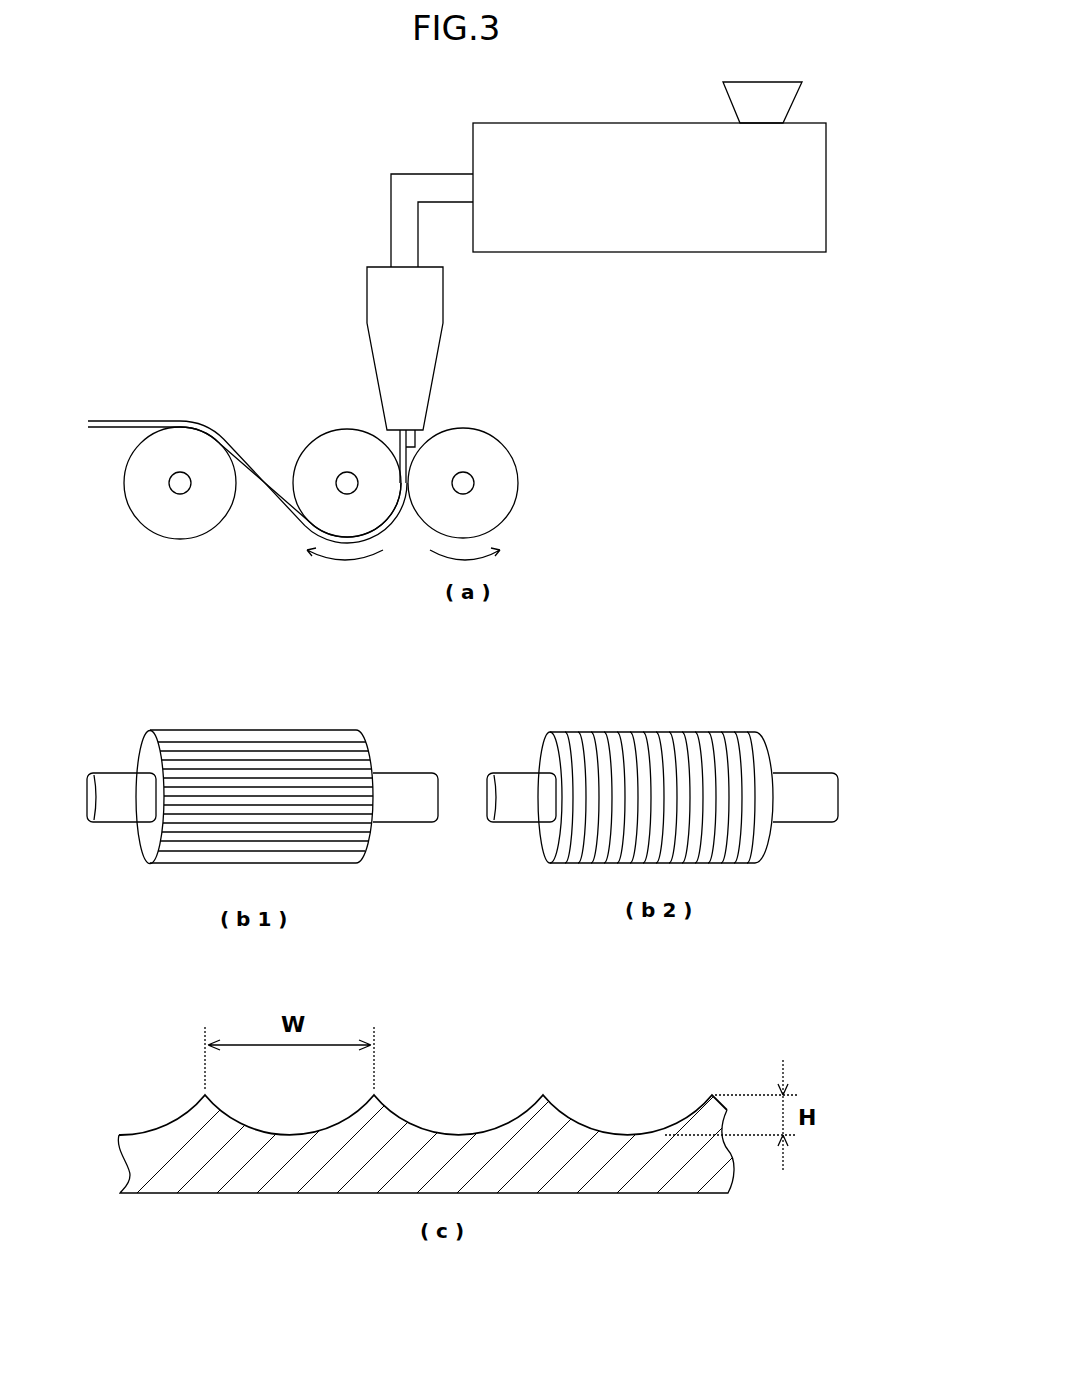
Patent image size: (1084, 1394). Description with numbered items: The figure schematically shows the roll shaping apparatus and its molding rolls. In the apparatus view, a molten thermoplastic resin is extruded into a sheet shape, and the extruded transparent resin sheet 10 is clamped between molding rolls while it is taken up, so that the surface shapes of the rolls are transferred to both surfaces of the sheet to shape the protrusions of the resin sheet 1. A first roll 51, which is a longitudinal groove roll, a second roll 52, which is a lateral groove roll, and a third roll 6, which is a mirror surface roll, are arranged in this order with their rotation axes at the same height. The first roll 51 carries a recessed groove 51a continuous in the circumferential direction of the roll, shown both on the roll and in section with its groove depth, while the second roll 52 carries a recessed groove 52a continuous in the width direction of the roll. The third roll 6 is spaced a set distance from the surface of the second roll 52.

The resin sheet 1 is at (130, 408).
The third roll 6 is at (193, 505).
The transparent resin sheet 10 is at (393, 448).
The first roll 51 is at (514, 441).
The recessed groove 51a is at (520, 468).
The second roll 52 is at (316, 420).
The recessed groove 52a is at (300, 452).